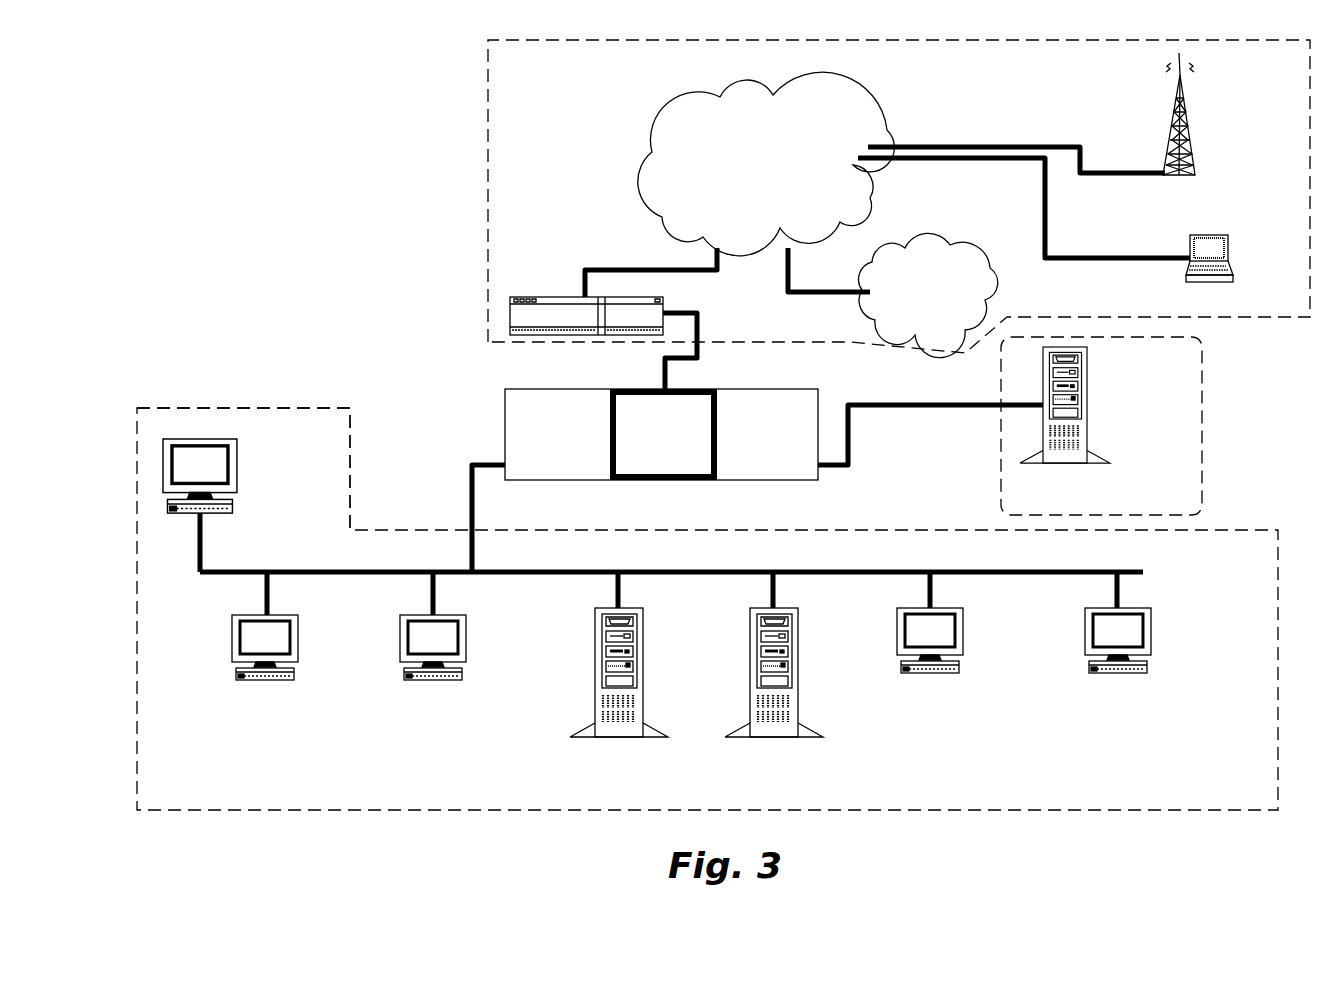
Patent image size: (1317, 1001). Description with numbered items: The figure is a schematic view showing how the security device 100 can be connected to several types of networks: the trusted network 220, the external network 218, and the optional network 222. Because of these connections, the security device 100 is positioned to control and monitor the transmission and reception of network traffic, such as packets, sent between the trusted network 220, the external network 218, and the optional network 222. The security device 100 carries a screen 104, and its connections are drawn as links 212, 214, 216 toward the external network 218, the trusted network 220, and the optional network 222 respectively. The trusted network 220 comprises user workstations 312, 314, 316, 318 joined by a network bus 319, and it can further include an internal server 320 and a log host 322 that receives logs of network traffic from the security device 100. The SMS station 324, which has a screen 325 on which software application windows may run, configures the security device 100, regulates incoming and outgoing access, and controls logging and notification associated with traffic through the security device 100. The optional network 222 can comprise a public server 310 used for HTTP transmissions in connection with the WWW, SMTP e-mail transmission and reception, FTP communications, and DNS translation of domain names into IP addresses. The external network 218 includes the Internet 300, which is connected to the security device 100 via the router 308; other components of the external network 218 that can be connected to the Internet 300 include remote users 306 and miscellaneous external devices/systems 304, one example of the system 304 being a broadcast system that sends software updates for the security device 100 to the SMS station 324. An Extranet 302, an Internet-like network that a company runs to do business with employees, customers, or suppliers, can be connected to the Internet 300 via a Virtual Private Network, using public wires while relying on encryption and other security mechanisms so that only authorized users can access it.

The security device 100 is at (774, 482).
The screen 104 is at (650, 452).
The internet interface connection 212 is at (655, 387).
The LAN interface connection 214 is at (500, 462).
The server interface connection 216 is at (822, 468).
The external network 218 is at (483, 140).
The trusted network 220 is at (250, 408).
The optional network 222 is at (1202, 430).
The Internet 300 is at (898, 107).
The Extranet 302 is at (938, 246).
The miscellaneous external devices/systems 304 is at (1195, 150).
The remote users 306 is at (1232, 248).
The router 308 is at (575, 297).
The public server 310 is at (1090, 410).
The user workstation 312 is at (300, 637).
The user workstation 314 is at (467, 637).
The user workstation 316 is at (963, 632).
The user workstation 318 is at (1151, 632).
The network bus 319 is at (1143, 572).
The internal server 320 is at (645, 638).
The log host 322 is at (800, 638).
The SMS station 324 is at (242, 500).
The screen 325 is at (215, 462).